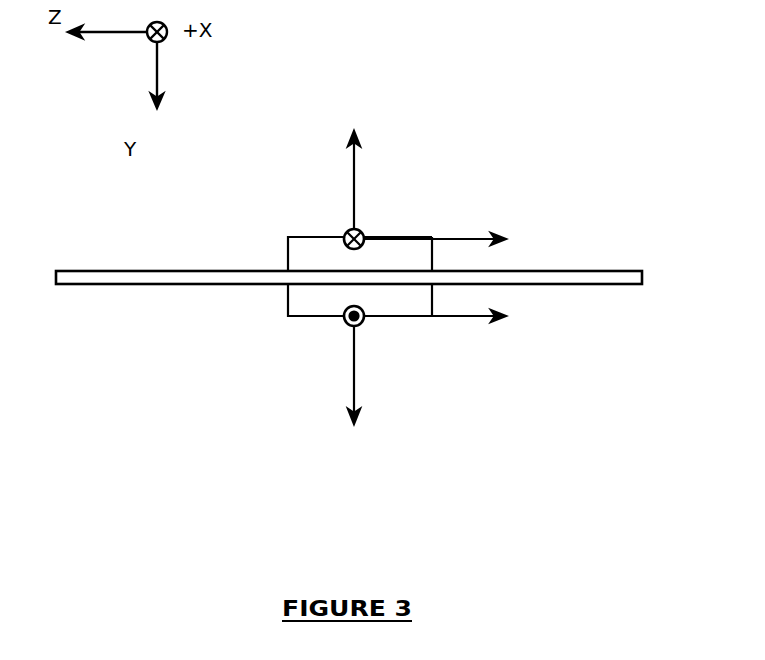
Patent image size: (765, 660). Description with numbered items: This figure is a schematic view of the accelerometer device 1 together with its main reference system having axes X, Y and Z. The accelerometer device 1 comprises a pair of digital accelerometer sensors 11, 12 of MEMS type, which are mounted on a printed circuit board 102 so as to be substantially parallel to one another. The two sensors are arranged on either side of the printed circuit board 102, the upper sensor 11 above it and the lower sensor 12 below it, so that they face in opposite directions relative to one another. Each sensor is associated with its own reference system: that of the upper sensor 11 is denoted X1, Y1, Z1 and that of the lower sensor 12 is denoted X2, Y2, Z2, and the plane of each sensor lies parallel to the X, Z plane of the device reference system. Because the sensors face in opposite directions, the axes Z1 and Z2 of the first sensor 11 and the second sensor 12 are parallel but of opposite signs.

The accelerometer device 1 is at (442, 382).
The upper sensor 11 is at (322, 237).
The lower sensor 12 is at (300, 305).
The printed circuit board 102 is at (157, 285).